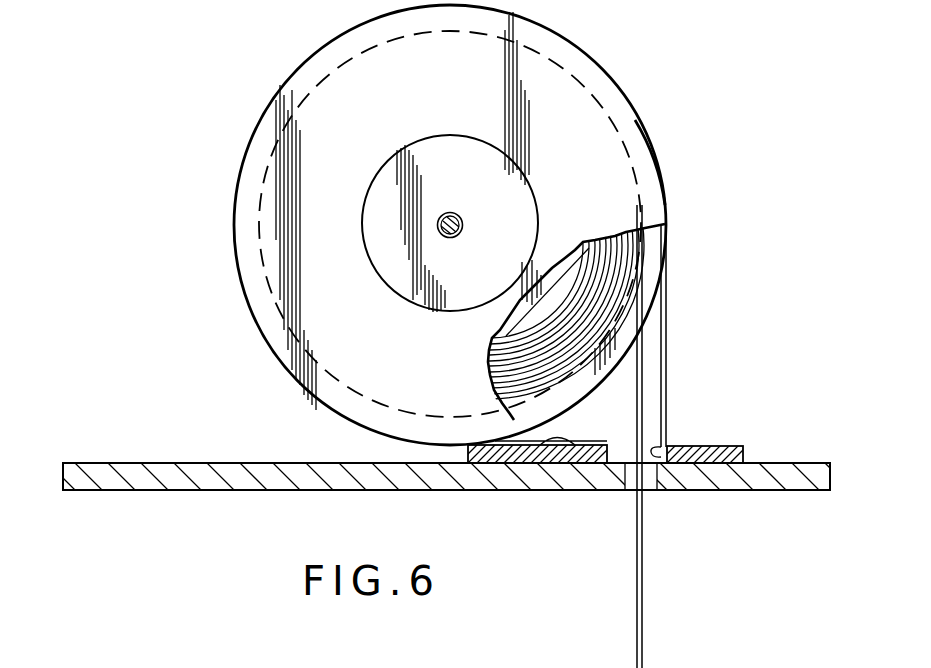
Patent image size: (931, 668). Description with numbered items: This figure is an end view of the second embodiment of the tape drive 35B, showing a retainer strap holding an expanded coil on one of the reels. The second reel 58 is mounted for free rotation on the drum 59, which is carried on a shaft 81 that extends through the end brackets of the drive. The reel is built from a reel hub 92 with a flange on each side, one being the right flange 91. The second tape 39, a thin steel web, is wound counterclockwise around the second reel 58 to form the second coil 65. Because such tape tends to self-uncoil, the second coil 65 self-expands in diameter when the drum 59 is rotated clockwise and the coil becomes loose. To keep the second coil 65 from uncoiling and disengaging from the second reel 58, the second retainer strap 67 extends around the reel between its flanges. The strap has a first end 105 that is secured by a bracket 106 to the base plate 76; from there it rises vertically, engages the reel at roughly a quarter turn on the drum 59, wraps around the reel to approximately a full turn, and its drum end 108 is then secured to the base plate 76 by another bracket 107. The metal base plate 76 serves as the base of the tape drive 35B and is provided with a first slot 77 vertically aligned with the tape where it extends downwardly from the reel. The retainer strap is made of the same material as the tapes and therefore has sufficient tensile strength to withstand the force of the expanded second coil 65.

The tape drive 35B is at (632, 57).
The second reel 58 is at (292, 59).
The drum 59 is at (392, 202).
The shaft 81 is at (447, 232).
The right flange 91 is at (654, 200).
The second coil 65 is at (625, 313).
The reel hub 92 is at (525, 335).
The second tape 39 is at (645, 378).
The second retainer strap 67 is at (668, 303).
The first end 105 is at (662, 440).
The bracket 106 is at (743, 447).
The bracket 107 is at (465, 457).
The drum end 108 is at (576, 440).
The base plate 76 is at (209, 485).
The first slot 77 is at (648, 478).